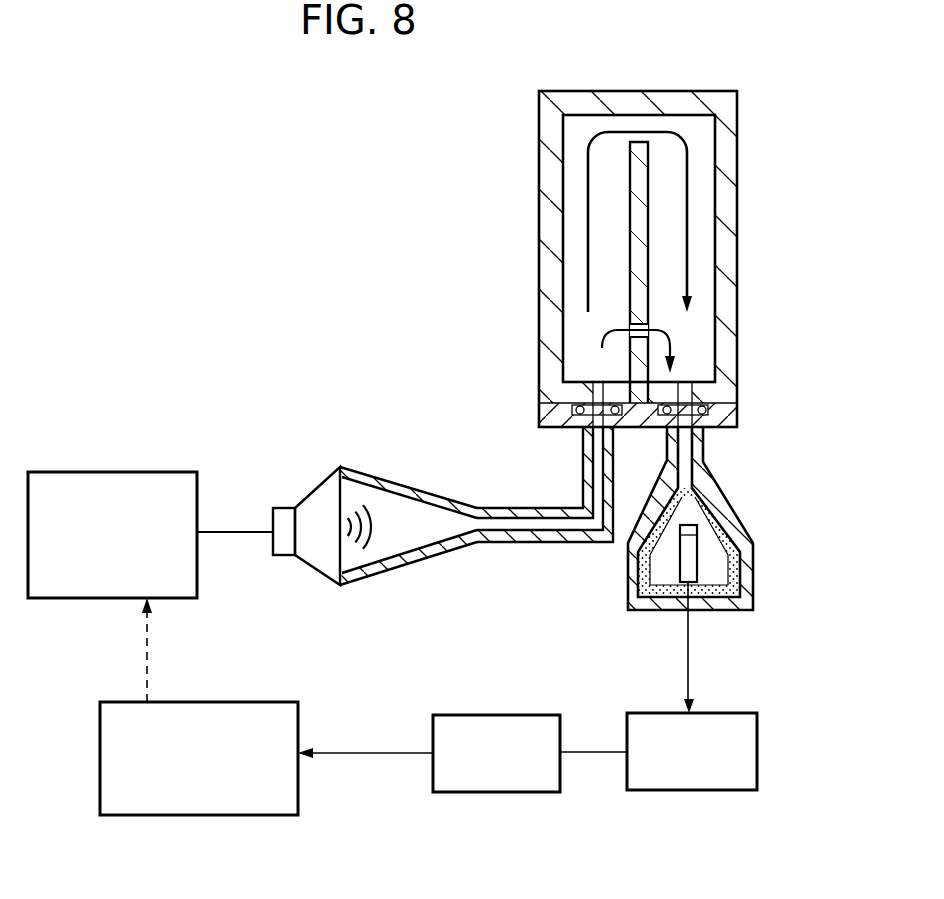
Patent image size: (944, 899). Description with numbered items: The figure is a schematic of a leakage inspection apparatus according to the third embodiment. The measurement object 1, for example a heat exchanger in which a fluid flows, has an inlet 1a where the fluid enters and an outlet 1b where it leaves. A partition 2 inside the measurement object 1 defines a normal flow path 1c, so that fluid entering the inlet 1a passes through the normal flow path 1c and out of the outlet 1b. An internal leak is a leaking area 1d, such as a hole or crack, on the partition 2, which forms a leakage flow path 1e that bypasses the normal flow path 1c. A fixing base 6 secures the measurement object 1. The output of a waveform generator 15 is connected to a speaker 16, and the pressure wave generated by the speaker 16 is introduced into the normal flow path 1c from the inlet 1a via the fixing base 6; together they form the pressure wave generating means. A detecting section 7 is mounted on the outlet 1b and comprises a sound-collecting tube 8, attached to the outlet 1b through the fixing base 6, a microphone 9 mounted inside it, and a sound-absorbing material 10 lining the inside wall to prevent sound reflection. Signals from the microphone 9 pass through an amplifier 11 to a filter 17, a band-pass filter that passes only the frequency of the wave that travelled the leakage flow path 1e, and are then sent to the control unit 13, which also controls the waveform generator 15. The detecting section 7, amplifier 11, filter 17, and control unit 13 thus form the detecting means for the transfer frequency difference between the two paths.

The measurement object 1 is at (741, 118).
The inlet 1a is at (590, 392).
The outlet 1b is at (697, 393).
The normal flow path 1c is at (690, 247).
The leaking area 1d is at (648, 330).
The leakage flow path 1e is at (673, 343).
The partition 2 is at (648, 188).
The fixing base 6 is at (572, 405).
The detecting section 7 is at (703, 518).
The sound-collecting tube 8 is at (747, 582).
The microphone 9 is at (677, 562).
The sound-absorbing material 10 is at (725, 495).
The amplifier 11 is at (698, 778).
The control unit 13 is at (205, 803).
The waveform generator 15 is at (150, 485).
The speaker 16 is at (313, 488).
The filter 17 is at (500, 780).